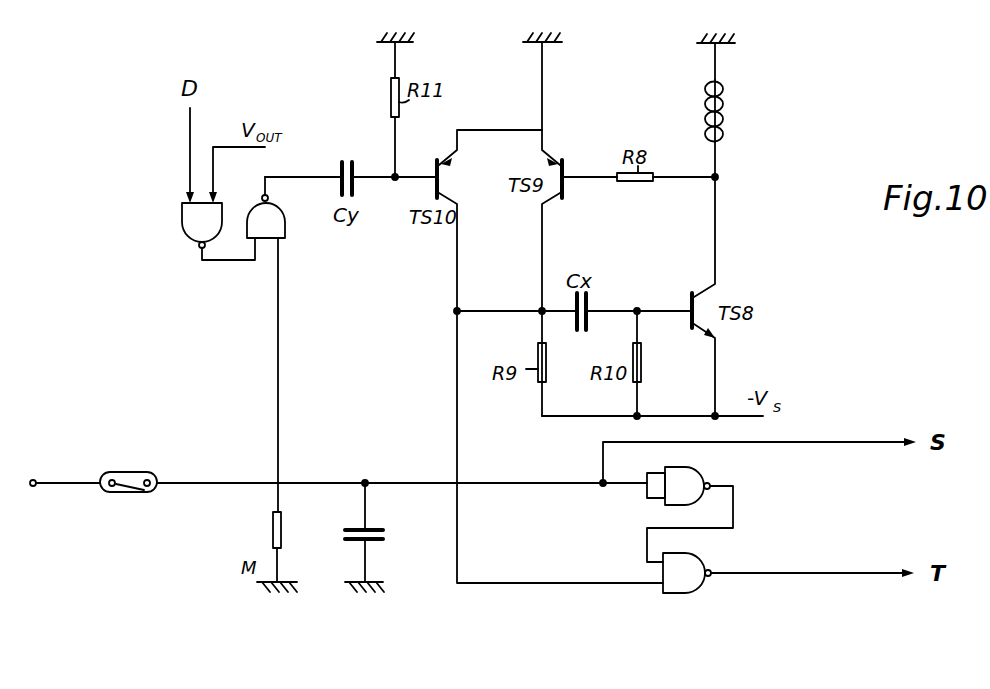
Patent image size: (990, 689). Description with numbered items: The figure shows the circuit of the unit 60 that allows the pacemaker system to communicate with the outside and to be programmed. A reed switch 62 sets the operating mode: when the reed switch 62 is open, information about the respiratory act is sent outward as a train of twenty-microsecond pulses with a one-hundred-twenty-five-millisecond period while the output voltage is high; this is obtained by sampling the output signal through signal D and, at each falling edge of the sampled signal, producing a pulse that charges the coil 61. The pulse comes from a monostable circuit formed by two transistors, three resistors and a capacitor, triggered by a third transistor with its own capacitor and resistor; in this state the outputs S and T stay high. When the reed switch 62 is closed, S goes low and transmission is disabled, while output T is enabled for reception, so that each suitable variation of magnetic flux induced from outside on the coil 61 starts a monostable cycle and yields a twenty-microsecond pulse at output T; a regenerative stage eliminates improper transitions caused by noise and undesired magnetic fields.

The unit 60 is at (734, 102).
The coil 61 is at (725, 106).
The reed switch 62 is at (136, 471).